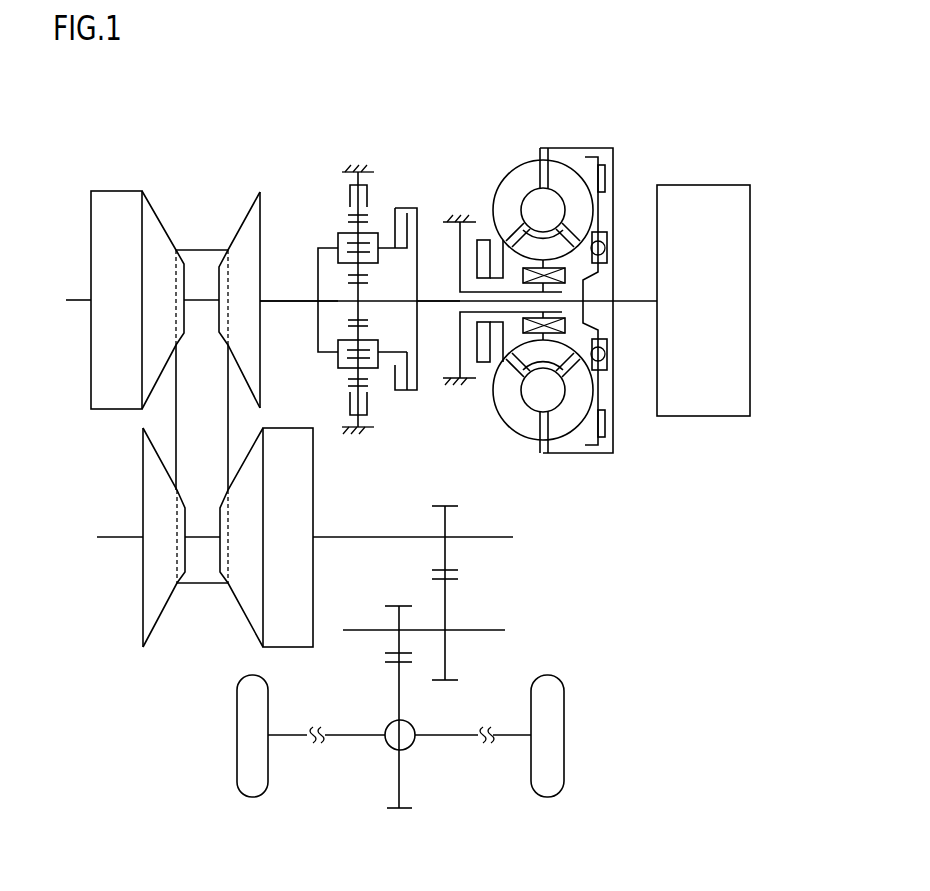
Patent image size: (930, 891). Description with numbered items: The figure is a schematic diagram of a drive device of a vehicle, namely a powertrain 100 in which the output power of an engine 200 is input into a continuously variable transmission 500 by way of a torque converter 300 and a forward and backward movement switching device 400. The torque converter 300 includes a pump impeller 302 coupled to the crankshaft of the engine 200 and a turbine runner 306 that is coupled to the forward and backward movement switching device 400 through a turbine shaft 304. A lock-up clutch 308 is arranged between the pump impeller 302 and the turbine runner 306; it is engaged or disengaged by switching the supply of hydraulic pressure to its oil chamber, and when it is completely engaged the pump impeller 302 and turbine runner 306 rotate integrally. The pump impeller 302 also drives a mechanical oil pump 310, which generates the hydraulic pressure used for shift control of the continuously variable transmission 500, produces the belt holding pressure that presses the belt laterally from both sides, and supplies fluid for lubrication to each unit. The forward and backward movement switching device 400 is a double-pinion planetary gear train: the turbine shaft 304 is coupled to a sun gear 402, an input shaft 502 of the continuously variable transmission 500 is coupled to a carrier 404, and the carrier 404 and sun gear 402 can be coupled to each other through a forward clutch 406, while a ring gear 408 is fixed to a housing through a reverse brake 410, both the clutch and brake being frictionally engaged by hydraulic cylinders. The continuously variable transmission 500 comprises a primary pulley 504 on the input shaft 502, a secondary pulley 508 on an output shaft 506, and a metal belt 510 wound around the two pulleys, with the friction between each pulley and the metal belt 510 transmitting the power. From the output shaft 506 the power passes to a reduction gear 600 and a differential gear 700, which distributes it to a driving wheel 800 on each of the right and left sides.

The powertrain 100 is at (714, 124).
The engine 200 is at (735, 254).
The torque converter 300 is at (550, 130).
The pump impeller 302 is at (517, 418).
The turbine shaft 304 is at (433, 303).
The turbine runner 306 is at (567, 427).
The lock-up clutch 308 is at (606, 178).
The mechanical oil pump 310 is at (483, 240).
The forward and backward movement switching device 400 is at (323, 166).
The sun gear 402 is at (353, 316).
The carrier 404 is at (338, 237).
The forward clutch 406 is at (407, 194).
The ring gear 408 is at (350, 388).
The reverse brake 410 is at (374, 190).
The continuously variable transmission 500 is at (199, 630).
The input shaft 502 is at (285, 297).
The primary pulley 504 is at (102, 213).
The output shaft 506 is at (362, 540).
The secondary pulley 508 is at (300, 500).
The metal belt 510 is at (202, 250).
The reduction gear 600 is at (503, 595).
The differential gear 700 is at (392, 738).
The driving wheel 800 is at (247, 757).